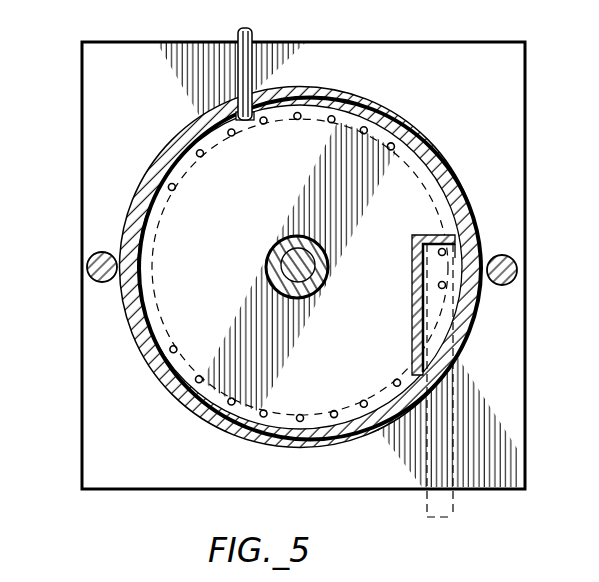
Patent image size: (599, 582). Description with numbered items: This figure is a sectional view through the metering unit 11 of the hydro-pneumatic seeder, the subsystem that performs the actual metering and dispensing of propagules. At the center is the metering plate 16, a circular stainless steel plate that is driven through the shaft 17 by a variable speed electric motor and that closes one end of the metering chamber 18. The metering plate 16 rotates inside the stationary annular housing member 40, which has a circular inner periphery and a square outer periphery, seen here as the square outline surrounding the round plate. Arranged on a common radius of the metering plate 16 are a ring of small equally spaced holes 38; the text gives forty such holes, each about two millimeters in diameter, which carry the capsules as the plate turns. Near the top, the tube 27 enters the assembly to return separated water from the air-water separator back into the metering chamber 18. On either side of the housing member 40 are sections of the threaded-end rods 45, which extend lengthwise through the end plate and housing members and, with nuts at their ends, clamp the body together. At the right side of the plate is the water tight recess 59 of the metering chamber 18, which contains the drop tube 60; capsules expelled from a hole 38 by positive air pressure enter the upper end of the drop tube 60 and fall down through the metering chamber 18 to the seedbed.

The metering unit 11 is at (452, 32).
The metering plate 16 is at (316, 200).
The shaft 17 is at (267, 261).
The metering chamber 18 is at (380, 100).
The tube 27 is at (254, 34).
The holes 38 is at (360, 133).
The annular housing member 40 is at (312, 41).
The threaded-end rods 45 is at (90, 258).
The water tight recess 59 is at (411, 270).
The drop tube 60 is at (427, 514).